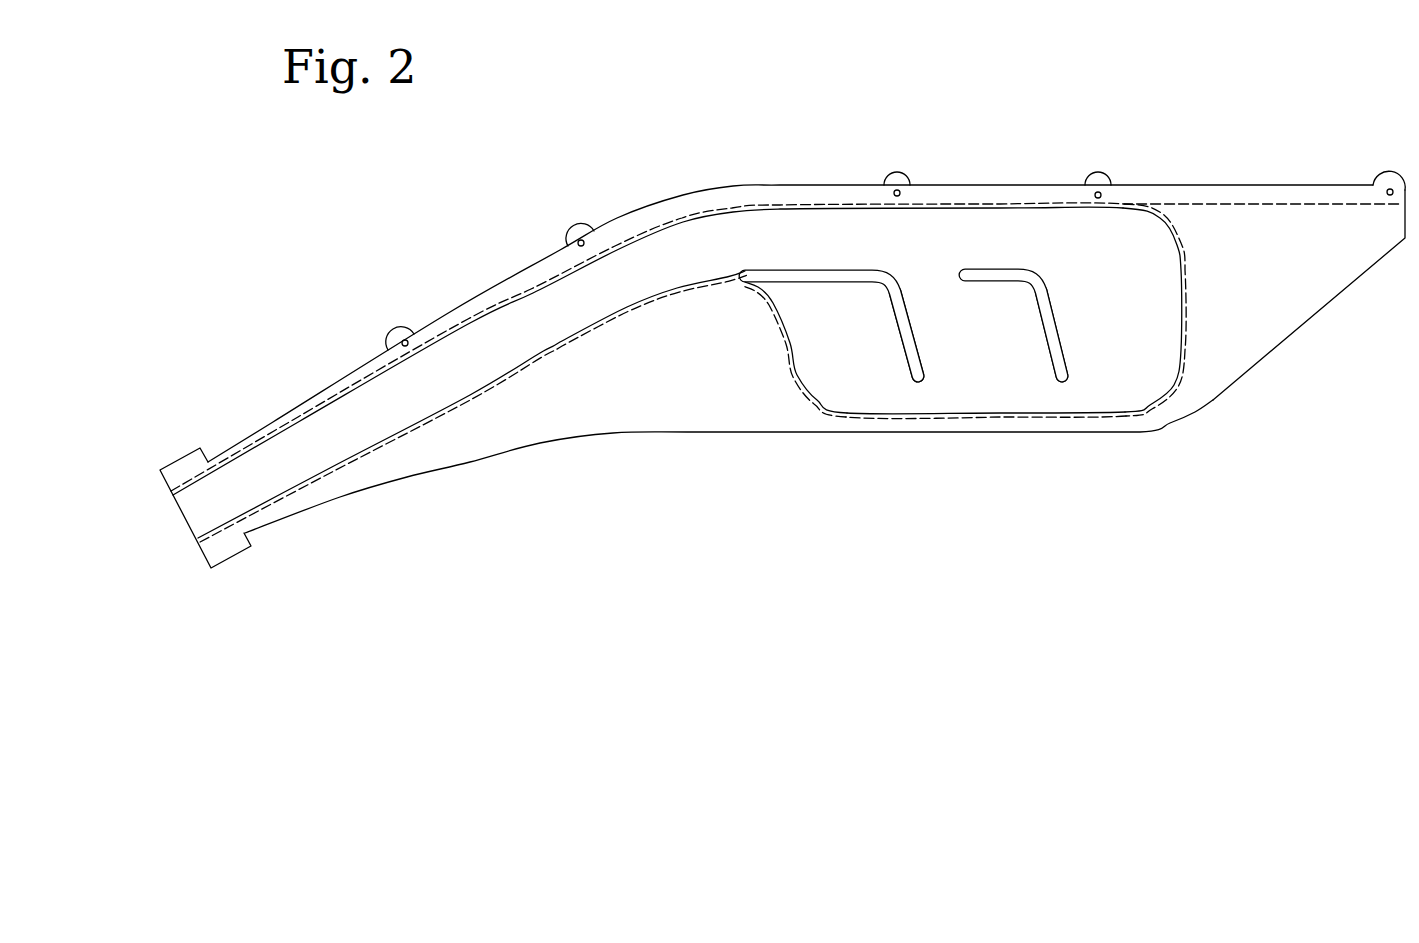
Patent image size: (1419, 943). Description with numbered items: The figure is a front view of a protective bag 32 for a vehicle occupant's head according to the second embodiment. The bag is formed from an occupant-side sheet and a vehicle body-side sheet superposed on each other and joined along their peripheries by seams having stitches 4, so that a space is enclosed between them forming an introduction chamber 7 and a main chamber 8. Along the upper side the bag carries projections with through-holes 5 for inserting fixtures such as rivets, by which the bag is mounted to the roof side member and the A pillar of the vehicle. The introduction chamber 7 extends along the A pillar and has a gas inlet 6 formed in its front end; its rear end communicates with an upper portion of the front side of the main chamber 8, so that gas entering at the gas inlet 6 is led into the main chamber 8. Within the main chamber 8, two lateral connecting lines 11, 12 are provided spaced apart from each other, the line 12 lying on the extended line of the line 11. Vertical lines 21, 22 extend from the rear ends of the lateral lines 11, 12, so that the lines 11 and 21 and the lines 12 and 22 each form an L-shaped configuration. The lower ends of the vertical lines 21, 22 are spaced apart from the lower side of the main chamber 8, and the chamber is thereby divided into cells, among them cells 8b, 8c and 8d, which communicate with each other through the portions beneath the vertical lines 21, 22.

The stitches 4 is at (428, 418).
The through-holes 5 is at (390, 338).
The gas inlet 6 is at (190, 510).
The introduction chamber 7 is at (533, 338).
The main chamber 8 is at (1001, 361).
The cell 8b is at (1140, 295).
The cell 8c is at (1017, 395).
The cell 8d is at (822, 378).
The connecting line 11 is at (874, 294).
The connecting line 12 is at (1053, 294).
The vertical line 21 is at (923, 337).
The vertical line 22 is at (1062, 333).
The bag 32 is at (768, 345).